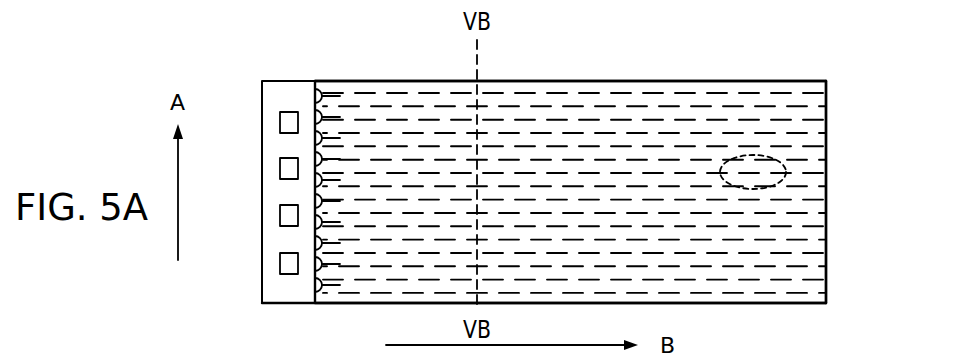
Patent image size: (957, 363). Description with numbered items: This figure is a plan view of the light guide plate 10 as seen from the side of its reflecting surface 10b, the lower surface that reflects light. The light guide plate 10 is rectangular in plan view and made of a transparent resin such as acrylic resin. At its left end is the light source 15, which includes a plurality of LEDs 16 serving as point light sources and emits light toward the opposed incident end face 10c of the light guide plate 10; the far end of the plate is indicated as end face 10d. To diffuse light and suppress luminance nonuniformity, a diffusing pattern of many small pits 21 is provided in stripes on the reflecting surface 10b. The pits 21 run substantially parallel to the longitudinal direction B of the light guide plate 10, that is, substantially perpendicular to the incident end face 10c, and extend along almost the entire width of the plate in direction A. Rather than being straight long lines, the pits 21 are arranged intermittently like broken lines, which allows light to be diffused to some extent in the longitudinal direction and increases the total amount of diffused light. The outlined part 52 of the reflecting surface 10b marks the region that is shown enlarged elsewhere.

The light guide plate 10 is at (658, 81).
The reflecting surface 10b is at (588, 130).
The incident end face 10c is at (317, 282).
The side surface of body 10d is at (826, 212).
The light source 15 is at (263, 81).
The LEDs 16 is at (282, 119).
The pits 21 is at (497, 105).
The part of the reflecting surface 52 is at (753, 155).